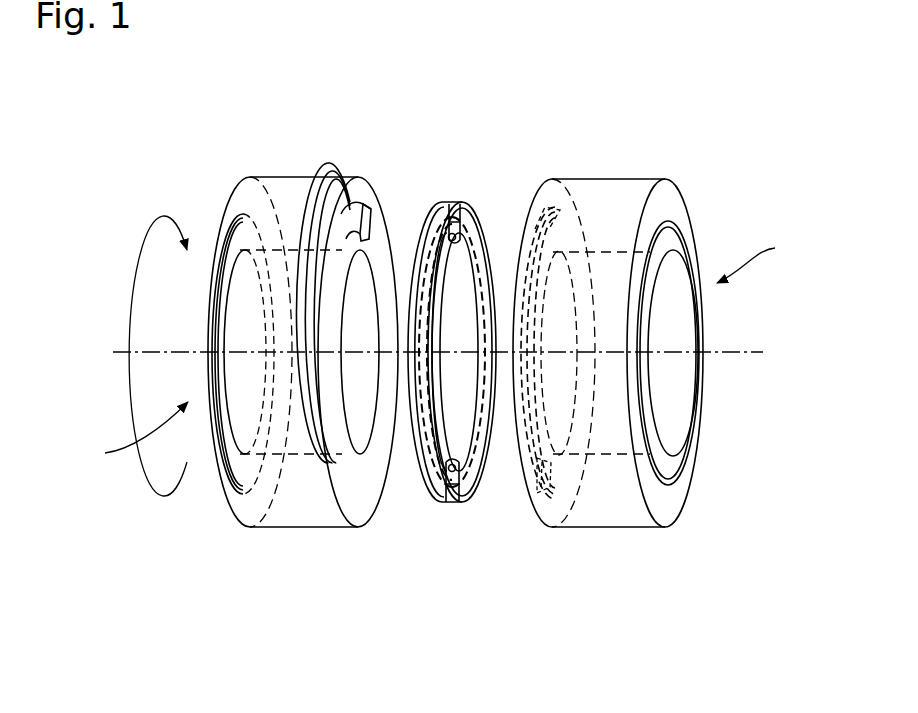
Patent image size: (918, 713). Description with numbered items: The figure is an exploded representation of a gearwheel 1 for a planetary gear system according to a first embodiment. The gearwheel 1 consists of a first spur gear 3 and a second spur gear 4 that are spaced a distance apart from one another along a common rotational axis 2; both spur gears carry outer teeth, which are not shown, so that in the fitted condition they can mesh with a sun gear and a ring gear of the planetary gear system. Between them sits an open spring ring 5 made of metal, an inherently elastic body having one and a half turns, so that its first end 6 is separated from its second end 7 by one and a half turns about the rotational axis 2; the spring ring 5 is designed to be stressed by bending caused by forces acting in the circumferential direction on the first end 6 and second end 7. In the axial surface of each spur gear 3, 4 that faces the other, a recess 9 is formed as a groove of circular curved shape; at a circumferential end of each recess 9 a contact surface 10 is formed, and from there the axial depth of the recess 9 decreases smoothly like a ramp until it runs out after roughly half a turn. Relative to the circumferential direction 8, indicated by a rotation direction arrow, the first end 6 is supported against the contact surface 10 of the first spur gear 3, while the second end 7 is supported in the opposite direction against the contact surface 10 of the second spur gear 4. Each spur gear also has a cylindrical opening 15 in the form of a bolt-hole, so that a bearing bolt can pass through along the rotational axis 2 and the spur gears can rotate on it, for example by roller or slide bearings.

The gearwheel 1 is at (253, 107).
The rotational axis 2 is at (745, 355).
The first spur gear 3 is at (288, 192).
The second spur gear 4 is at (622, 190).
The open spring ring 5 is at (478, 228).
The first end 6 is at (462, 197).
The second end 7 is at (465, 512).
The circumferential direction 8 is at (137, 262).
The recess 9 is at (357, 207).
The contact surface 10 is at (380, 222).
The cylindrical opening 15 is at (443, 352).